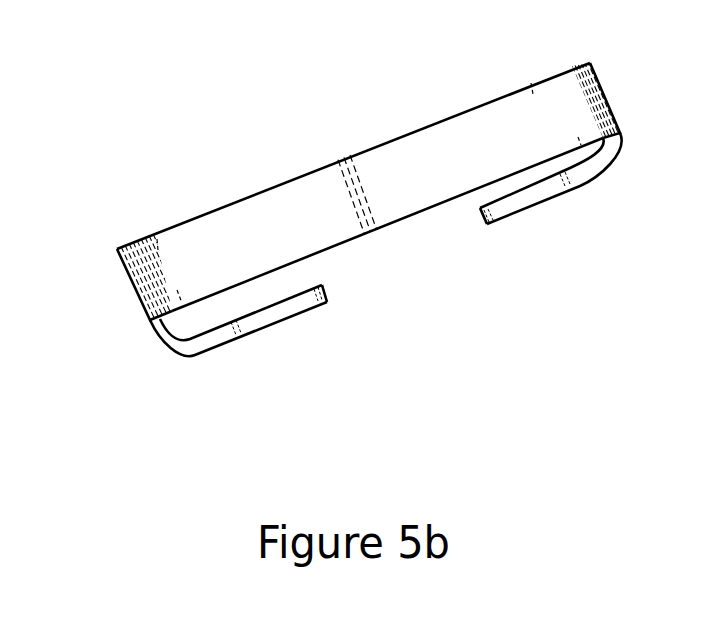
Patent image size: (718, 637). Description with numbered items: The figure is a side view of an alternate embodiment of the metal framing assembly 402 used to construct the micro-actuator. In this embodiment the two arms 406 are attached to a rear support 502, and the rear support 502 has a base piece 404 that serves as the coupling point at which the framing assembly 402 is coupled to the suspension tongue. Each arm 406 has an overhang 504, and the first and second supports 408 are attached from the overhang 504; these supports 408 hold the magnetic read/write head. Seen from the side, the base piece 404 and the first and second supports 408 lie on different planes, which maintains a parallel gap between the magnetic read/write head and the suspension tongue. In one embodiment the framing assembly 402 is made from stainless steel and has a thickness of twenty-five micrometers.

The framing assembly 402 is at (361, 219).
The base piece 404 is at (263, 318).
The arm 406 is at (392, 157).
The support 408 is at (552, 191).
The rear support 502 is at (126, 310).
The overhang 504 is at (600, 97).